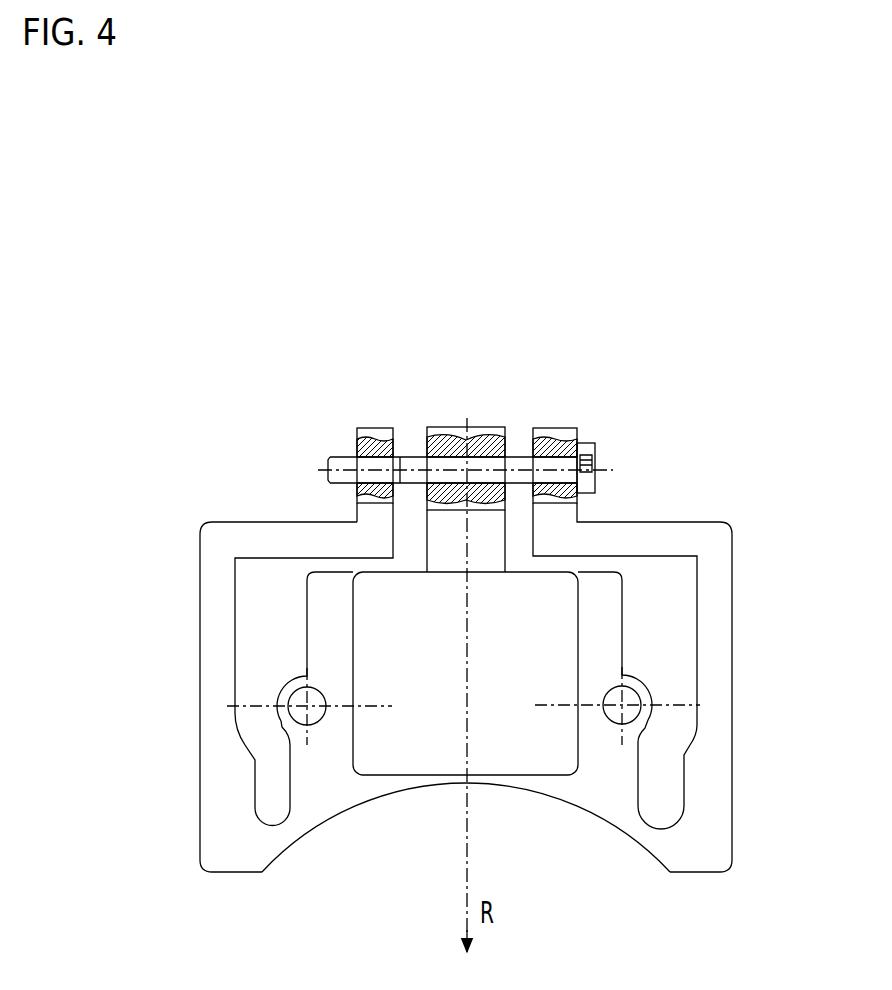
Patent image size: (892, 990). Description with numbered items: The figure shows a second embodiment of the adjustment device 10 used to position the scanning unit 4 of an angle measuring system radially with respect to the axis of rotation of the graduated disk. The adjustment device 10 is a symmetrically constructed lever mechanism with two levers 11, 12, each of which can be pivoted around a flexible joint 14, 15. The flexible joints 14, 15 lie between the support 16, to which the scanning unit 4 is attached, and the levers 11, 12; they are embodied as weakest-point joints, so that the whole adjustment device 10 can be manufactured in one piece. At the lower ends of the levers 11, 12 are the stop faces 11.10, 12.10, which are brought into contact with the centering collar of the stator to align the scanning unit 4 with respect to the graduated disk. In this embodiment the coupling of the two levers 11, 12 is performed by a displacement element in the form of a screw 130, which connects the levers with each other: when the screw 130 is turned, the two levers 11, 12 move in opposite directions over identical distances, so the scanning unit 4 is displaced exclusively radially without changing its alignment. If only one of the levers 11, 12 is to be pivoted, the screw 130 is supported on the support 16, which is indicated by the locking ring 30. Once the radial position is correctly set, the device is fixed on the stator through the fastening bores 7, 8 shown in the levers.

The scanning unit 4 is at (520, 648).
The fastening bore 7 is at (303, 702).
The fastening bore 8 is at (617, 708).
The adjustment device 10 is at (735, 513).
The lever 11 is at (213, 648).
The lever 12 is at (720, 613).
The stop face 11.10 is at (267, 865).
The stop face 12.10 is at (656, 857).
The flexible joint 14 is at (293, 827).
The flexible joint 15 is at (627, 828).
The support 16 is at (600, 647).
The locking ring 30 is at (425, 447).
The screw 130 is at (595, 441).